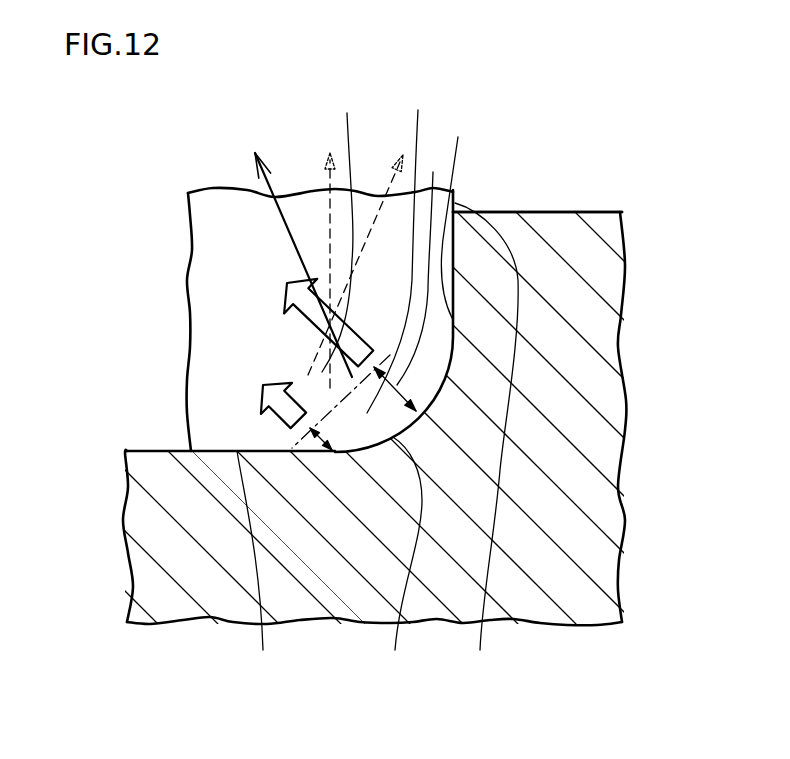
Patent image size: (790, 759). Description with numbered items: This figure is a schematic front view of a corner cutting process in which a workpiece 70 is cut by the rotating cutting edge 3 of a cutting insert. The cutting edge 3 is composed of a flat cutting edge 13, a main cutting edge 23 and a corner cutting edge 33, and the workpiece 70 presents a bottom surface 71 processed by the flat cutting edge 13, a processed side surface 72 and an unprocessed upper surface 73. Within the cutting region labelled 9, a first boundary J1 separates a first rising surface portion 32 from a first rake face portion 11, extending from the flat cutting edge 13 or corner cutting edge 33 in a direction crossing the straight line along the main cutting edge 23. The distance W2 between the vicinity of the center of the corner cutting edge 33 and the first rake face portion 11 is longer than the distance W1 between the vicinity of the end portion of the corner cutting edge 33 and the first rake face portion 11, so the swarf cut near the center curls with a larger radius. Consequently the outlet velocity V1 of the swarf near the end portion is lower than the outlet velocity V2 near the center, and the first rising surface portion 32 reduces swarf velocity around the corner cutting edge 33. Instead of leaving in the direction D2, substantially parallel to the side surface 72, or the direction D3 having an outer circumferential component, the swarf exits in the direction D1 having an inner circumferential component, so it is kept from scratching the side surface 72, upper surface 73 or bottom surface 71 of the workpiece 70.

The cutting edge 3 is at (243, 681).
The weld bead 9 is at (433, 87).
The first rake face portion 11 is at (341, 229).
The flat cutting edge 13 is at (257, 566).
The main cutting edge 23 is at (486, 442).
The first rising surface portion 32 is at (398, 250).
The corner cutting edge 33 is at (401, 559).
The workpiece 70 is at (598, 267).
The bottom surface 71 is at (152, 451).
The side surface 72 is at (456, 216).
The upper surface 73 is at (563, 212).
The direction D1 is at (273, 192).
The direction D2 is at (330, 182).
The direction D3 is at (390, 185).
The first boundary J1 is at (332, 410).
The outlet velocity V1 is at (262, 397).
The outlet velocity V2 is at (290, 293).
The distance W1 is at (300, 450).
The distance W2 is at (412, 277).